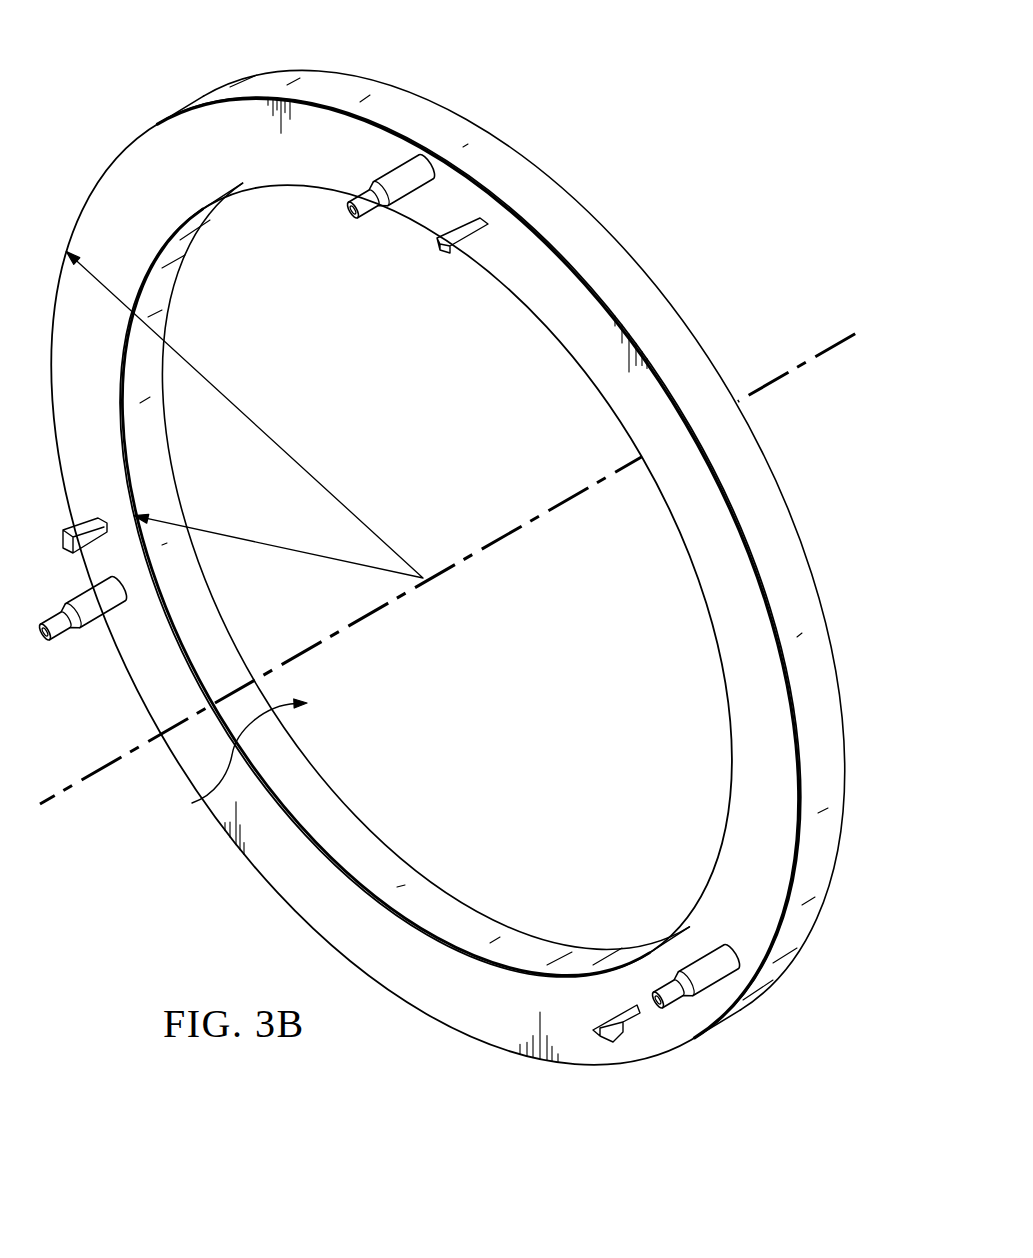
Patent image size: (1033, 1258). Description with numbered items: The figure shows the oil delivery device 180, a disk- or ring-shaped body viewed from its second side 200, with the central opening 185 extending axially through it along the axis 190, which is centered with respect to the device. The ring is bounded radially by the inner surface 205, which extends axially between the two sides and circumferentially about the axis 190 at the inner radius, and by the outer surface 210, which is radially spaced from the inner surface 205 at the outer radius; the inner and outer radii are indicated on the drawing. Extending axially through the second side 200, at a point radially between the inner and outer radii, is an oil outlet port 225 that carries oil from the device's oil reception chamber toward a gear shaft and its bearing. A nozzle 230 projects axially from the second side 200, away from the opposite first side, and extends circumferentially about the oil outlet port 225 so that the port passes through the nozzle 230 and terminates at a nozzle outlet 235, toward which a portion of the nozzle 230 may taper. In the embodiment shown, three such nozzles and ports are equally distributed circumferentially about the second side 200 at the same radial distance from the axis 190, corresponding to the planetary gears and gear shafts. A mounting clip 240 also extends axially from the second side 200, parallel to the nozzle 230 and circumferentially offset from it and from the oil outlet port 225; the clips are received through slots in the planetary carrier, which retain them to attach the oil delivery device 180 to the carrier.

The oil delivery device 180 is at (478, 596).
The opening 185 is at (192, 803).
The axis 190 is at (498, 532).
The second side 200 is at (127, 168).
The inner surface 205 is at (457, 917).
The outer surface 210 is at (793, 541).
The oil outlet port 225 is at (340, 210).
The nozzle 230 is at (410, 160).
The nozzle outlet 235 is at (358, 220).
The mounting clip 240 is at (470, 252).